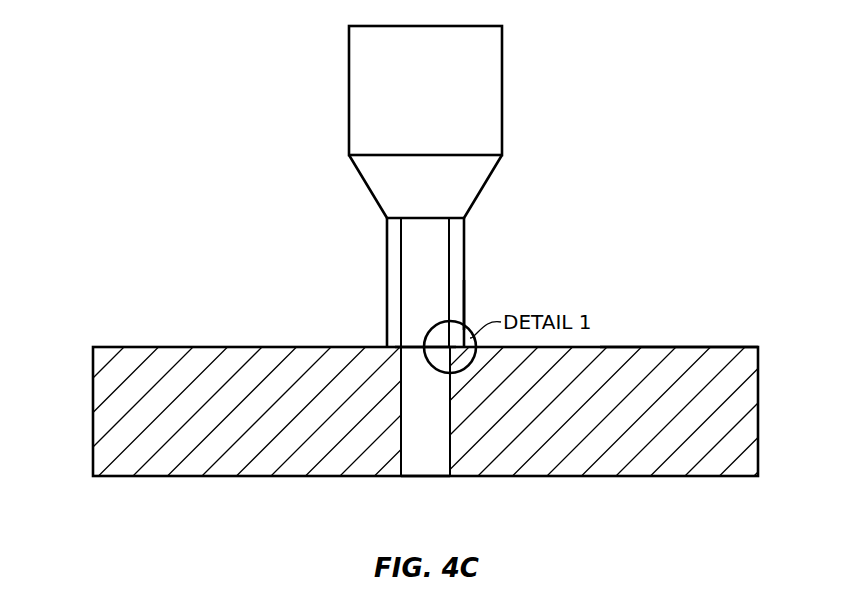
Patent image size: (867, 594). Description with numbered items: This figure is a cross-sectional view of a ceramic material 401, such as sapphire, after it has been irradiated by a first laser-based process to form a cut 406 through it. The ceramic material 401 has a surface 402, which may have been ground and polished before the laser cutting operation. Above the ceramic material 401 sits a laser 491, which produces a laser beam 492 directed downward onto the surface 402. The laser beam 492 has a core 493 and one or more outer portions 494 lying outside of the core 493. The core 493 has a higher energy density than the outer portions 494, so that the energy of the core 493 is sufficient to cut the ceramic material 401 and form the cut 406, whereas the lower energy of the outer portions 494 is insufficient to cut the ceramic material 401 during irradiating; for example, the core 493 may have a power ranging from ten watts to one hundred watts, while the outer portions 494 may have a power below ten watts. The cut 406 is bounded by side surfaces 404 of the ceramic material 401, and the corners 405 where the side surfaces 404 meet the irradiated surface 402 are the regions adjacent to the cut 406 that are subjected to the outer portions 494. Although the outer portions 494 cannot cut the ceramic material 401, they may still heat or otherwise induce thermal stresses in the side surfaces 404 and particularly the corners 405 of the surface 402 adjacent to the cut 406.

The ceramic material 401 is at (93, 413).
The surface 402 is at (687, 347).
The side surfaces 404 is at (455, 462).
The corners 405 is at (447, 345).
The cut 406 is at (426, 480).
The laser 491 is at (503, 94).
The laser beam 492 is at (466, 307).
The core 493 is at (450, 262).
The outer portions 494 is at (464, 240).